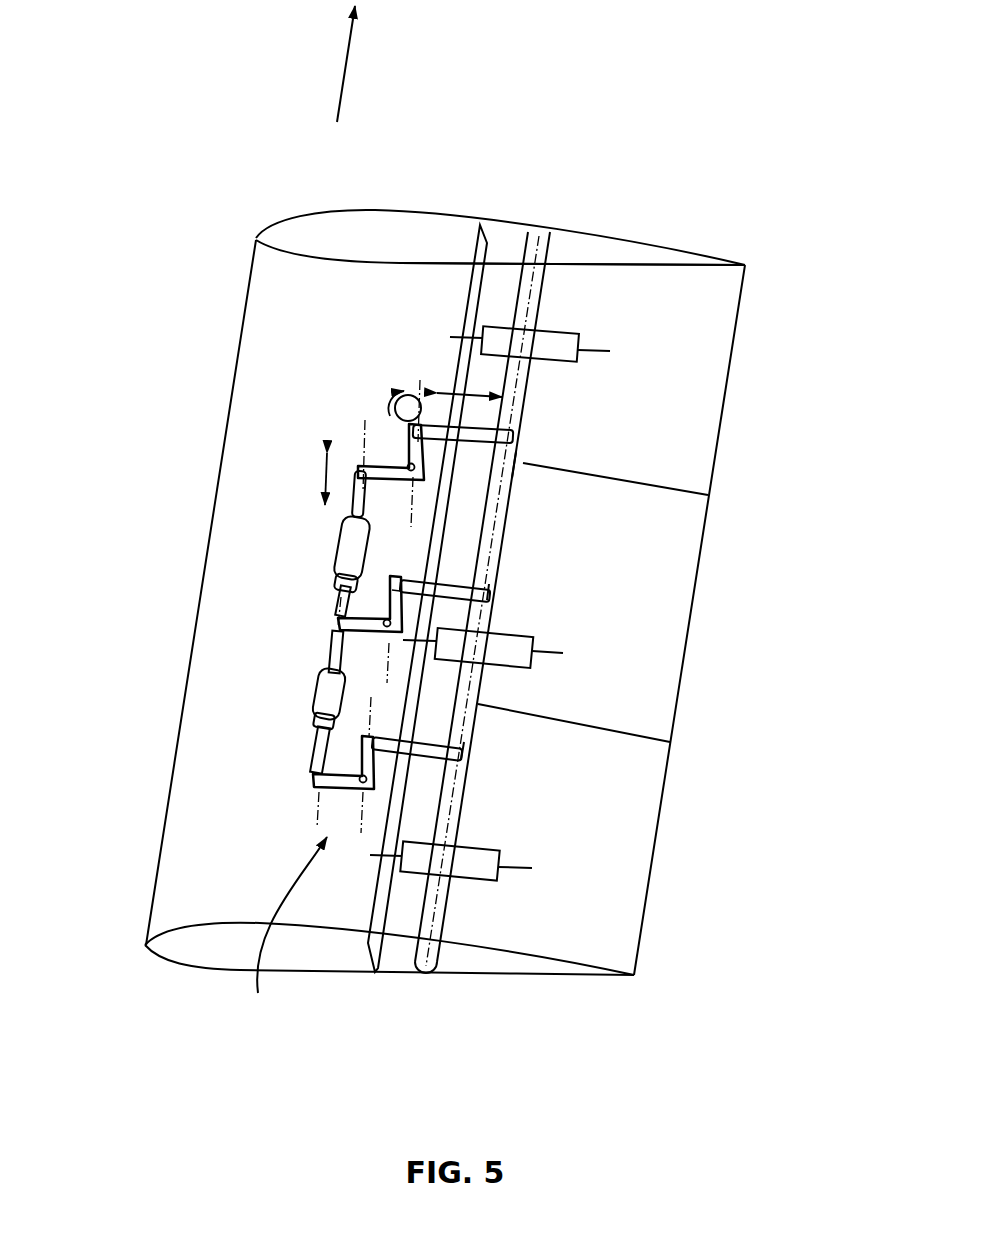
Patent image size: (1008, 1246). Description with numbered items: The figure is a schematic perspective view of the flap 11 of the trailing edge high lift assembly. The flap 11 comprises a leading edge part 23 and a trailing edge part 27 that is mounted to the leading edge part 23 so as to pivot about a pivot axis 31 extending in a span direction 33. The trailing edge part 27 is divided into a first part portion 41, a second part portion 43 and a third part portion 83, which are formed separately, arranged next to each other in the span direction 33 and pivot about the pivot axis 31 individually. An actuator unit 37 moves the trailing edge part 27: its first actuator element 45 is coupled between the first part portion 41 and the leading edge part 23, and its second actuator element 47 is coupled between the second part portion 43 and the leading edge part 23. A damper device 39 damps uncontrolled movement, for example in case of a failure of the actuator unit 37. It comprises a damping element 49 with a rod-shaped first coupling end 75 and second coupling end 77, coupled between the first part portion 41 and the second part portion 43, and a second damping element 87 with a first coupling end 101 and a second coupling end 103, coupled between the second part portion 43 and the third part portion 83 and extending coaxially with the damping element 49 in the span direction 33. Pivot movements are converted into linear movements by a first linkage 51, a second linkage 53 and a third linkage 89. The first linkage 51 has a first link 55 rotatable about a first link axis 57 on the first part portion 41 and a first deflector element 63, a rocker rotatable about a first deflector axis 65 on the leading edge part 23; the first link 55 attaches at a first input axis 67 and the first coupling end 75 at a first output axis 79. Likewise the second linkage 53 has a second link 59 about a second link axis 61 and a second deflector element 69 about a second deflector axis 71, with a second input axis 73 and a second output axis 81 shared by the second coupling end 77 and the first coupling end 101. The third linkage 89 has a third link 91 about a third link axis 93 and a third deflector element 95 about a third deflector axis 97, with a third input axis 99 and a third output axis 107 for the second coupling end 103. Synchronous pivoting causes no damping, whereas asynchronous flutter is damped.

The flap 11 is at (170, 185).
The leading edge part 23 is at (382, 273).
The trailing edge part 27 is at (622, 531).
The pivot axis 31 is at (532, 280).
The span direction 33 is at (350, 66).
The actuator unit 37 is at (607, 629).
The damper device 39 is at (284, 932).
The first part portion 41 is at (622, 280).
The second part portion 43 is at (683, 507).
The first actuator element 45 is at (613, 278).
The second actuator element 47 is at (623, 637).
The damping element 49 is at (275, 494).
The first linkage 51 is at (387, 440).
The second linkage 53 is at (298, 631).
The first link 55 is at (524, 454).
The first link axis 57 is at (513, 465).
The second link 59 is at (491, 575).
The second link axis 61 is at (483, 593).
The first deflector element 63 is at (425, 447).
The first deflector axis 65 is at (413, 495).
The first input axis 67 is at (422, 393).
The second deflector element 69 is at (398, 600).
The second deflector axis 71 is at (392, 658).
The second input axis 73 is at (423, 557).
The first coupling end 75 is at (357, 475).
The second coupling end 77 is at (343, 613).
The first output axis 79 is at (367, 437).
The second output axis 81 is at (357, 573).
The third part portion 83 is at (647, 734).
The second damping element 87 is at (327, 697).
The third linkage 89 is at (267, 805).
The third link 91 is at (459, 774).
The third link axis 93 is at (468, 723).
The third deflector element 95 is at (375, 760).
The third deflector axis 97 is at (363, 808).
The third input axis 99 is at (375, 725).
The first coupling end 101 is at (337, 640).
The second coupling end 103 is at (322, 757).
The third output axis 107 is at (317, 805).